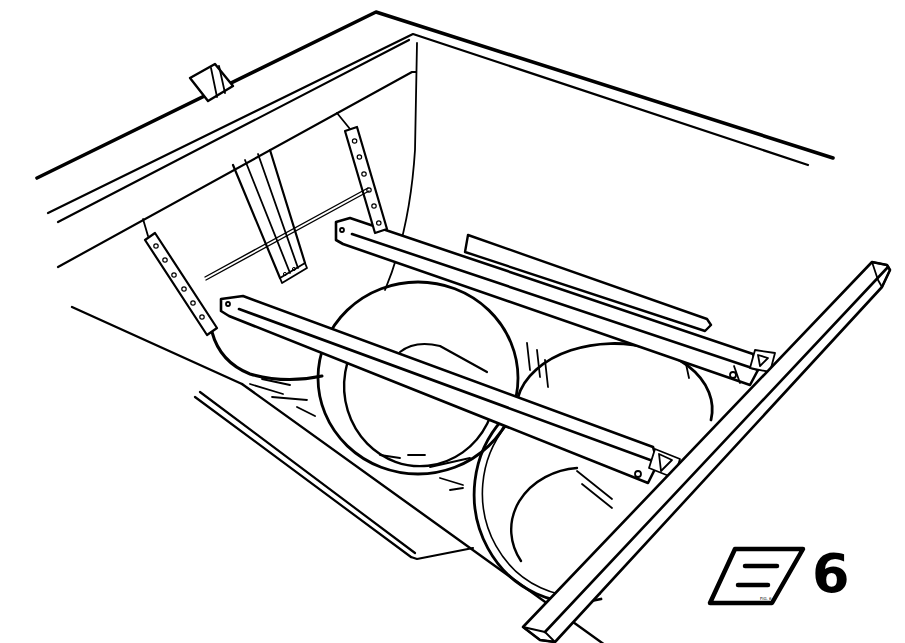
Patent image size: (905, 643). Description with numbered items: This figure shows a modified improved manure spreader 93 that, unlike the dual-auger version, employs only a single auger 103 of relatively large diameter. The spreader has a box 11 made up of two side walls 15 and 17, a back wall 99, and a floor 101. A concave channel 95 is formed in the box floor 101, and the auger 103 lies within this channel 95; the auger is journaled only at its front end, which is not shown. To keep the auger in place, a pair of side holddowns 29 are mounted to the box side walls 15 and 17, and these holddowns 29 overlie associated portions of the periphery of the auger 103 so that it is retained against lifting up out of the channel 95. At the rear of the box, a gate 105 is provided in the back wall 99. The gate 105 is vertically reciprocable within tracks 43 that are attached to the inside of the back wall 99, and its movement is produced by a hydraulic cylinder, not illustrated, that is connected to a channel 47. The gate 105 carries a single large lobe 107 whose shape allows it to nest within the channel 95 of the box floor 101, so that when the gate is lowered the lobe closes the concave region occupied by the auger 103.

The box 11 is at (763, 129).
The side wall 15 is at (572, 98).
The side wall 17 is at (146, 392).
The side holddown 29 is at (553, 278).
The track 43 is at (363, 144).
The channel 47 is at (218, 66).
The modified improved manure spreader 93 is at (657, 86).
The channel 95 is at (228, 383).
The back wall 99 is at (402, 98).
The floor 101 is at (262, 404).
The auger 103 is at (492, 557).
The gate 105 is at (346, 192).
The lobe 107 is at (326, 312).